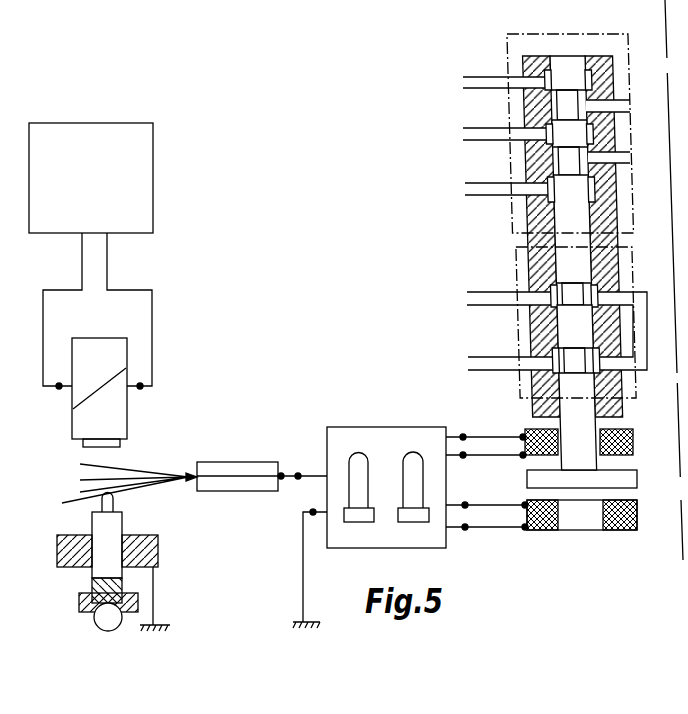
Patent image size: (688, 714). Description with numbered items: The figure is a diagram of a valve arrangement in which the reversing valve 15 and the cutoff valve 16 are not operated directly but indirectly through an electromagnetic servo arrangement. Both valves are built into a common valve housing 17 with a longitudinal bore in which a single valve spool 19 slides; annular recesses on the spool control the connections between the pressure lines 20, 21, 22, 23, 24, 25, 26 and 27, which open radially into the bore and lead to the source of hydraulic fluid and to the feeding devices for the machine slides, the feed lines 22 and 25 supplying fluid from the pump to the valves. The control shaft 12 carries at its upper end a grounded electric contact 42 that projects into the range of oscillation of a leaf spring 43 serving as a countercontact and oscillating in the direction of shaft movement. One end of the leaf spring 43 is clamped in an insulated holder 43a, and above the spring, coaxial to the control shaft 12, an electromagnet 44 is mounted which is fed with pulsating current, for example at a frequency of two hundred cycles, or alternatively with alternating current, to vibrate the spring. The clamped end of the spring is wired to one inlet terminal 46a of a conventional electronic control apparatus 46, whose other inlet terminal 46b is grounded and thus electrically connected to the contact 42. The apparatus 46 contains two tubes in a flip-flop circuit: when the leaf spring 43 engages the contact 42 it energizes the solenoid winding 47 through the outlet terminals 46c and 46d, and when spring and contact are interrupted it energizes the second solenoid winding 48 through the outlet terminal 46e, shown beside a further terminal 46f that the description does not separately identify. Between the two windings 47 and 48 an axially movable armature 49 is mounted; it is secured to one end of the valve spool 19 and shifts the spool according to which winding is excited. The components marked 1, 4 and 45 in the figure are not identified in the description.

The support 1 is at (158, 548).
The boundary line 4 is at (676, 280).
The control shaft 12 is at (105, 551).
The reversing valve 15 is at (500, 50).
The cutoff valve 16 is at (511, 390).
The common valve housing 17 is at (615, 195).
The valve spool 19 is at (563, 222).
The pressure line 20 is at (463, 82).
The pressure line 21 is at (630, 103).
The feed line 22 is at (463, 135).
The pressure line 23 is at (630, 157).
The pressure line 24 is at (465, 190).
The feed line 25 is at (467, 300).
The pressure line 26 is at (647, 322).
The pressure line 27 is at (468, 364).
The electric contact 42 is at (102, 504).
The leaf spring 43 is at (145, 472).
The insulated holder 43a is at (236, 462).
The electromagnet 44 is at (92, 427).
The counter 45 is at (139, 178).
The electronic control apparatus 46 is at (372, 433).
The inlet terminal 46a is at (302, 466).
The inlet terminal 46b is at (310, 559).
The outlet terminal 46c is at (486, 428).
The outlet terminal 46d is at (486, 446).
The outlet terminal 46e is at (487, 497).
The lead 46f is at (487, 518).
The solenoid winding 47 is at (633, 442).
The second solenoid winding 48 is at (637, 517).
The armature 49 is at (625, 480).